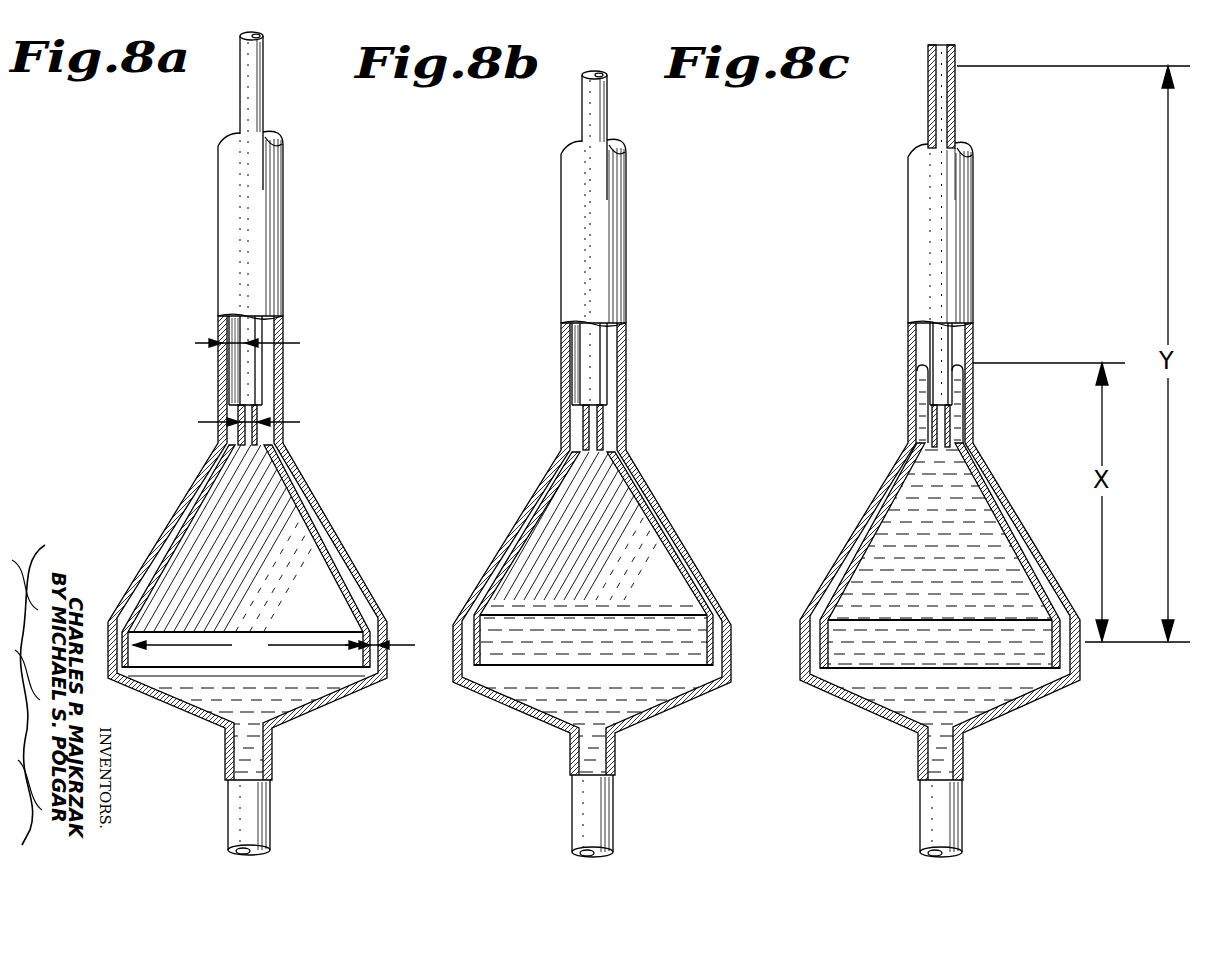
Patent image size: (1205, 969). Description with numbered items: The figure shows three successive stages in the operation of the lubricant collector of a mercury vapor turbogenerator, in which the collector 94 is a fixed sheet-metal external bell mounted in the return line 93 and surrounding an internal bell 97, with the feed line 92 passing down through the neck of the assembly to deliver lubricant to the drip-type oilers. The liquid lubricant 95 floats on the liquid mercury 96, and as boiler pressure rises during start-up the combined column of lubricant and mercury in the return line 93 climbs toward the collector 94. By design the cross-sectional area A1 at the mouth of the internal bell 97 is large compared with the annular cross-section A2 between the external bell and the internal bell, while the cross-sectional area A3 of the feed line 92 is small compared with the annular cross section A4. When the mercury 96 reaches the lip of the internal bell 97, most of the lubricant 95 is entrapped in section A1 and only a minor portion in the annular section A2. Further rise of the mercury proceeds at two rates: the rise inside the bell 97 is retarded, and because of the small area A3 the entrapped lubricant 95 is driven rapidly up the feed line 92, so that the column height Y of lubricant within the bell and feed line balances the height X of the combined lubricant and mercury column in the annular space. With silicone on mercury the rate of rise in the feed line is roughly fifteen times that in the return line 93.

In FIG. 8A, the feed line 92 is at (257, 103).
In FIG. 8B, the feed line 92 is at (602, 103).
In FIG. 8C, the feed line 92 is at (934, 108).
In FIG. 8A, the return line 93 is at (270, 240).
In FIG. 8B, the return line 93 is at (612, 207).
In FIG. 8C, the return line 93 is at (966, 260).
In FIG. 8A, the collector 94 is at (325, 531).
In FIG. 8B, the collector 94 is at (676, 547).
In FIG. 8C, the collector 94 is at (1043, 586).
In FIG. 8A, the liquid lubricant 95 is at (216, 706).
In FIG. 8B, the liquid lubricant 95 is at (680, 652).
In FIG. 8C, the liquid lubricant 95 is at (950, 105).
In FIG. 8B, the liquid mercury 96 is at (650, 692).
In FIG. 8C, the liquid mercury 96 is at (1003, 690).
In FIG. 8A, the internal bell 97 is at (183, 536).
In FIG. 8B, the internal bell 97 is at (540, 548).
In FIG. 8C, the internal bell 97 is at (868, 558).
In FIG. 8A, the cross-sectional area at the mouth of the internal bell A1 is at (247, 645).
In FIG. 8A, the annular cross-section A2 is at (388, 626).
In FIG. 8A, the cross-sectional area of the feed line A3 is at (223, 408).
In FIG. 8A, the annular cross section A4 is at (218, 333).